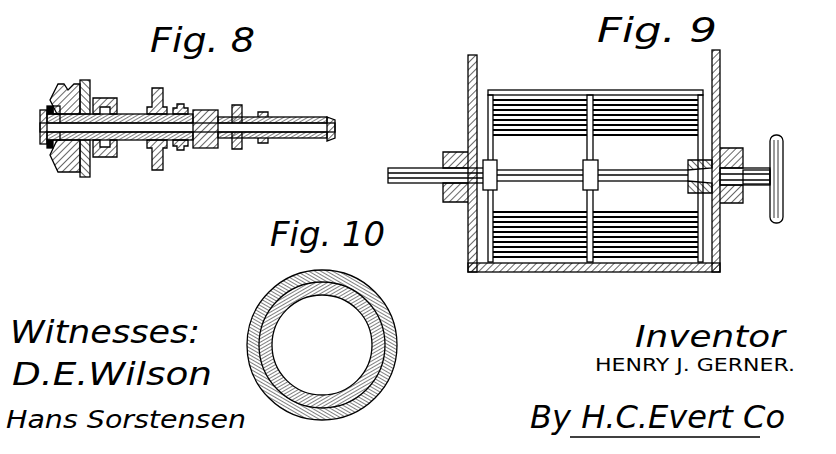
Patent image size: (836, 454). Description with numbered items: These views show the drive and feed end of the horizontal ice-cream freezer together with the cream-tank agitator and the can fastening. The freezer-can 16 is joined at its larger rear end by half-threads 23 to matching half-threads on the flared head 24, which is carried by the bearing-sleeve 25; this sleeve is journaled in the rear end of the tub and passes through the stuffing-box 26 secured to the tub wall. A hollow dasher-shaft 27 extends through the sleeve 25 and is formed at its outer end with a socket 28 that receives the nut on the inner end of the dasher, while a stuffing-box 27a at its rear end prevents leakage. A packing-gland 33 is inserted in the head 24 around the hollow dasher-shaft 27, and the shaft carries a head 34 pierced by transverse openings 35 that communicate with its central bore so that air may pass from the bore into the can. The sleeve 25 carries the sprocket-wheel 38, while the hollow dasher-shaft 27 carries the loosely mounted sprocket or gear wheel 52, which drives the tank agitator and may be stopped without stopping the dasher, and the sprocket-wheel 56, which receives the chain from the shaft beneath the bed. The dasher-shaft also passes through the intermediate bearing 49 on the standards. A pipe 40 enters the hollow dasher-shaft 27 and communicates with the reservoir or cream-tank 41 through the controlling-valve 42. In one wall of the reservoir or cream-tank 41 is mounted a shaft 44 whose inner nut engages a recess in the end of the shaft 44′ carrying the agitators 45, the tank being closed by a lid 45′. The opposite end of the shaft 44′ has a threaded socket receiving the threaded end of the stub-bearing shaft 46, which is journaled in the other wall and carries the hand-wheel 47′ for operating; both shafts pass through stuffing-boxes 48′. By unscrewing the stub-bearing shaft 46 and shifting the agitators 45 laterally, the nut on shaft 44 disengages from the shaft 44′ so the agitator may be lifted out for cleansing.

In FIG. 8, the freezer-can 16 is at (84, 172).
In FIG. 10, the freezer-can 16 is at (366, 291).
In FIG. 10, the half-threads 23 is at (395, 330).
In FIG. 8, the flared head 24 is at (60, 86).
In FIG. 10, the flared head 24 is at (332, 291).
In FIG. 8, the bearing-sleeve 25 is at (129, 114).
In FIG. 8, the stuffing-box 26 is at (104, 157).
In FIG. 8, the hollow dasher-shaft 27 is at (131, 133).
In FIG. 8, the stuffing-box 27a is at (266, 139).
In FIG. 8, the socket 28 is at (40, 127).
In FIG. 8, the packing-gland 33 is at (56, 142).
In FIG. 8, the head 34 is at (46, 140).
In FIG. 8, the transverse openings 35 is at (54, 108).
In FIG. 8, the sprocket-wheel 38 is at (158, 170).
In FIG. 8, the pipe 40 is at (285, 124).
In FIG. 8, the controlling-valve 42 is at (330, 118).
In FIG. 8, the intermediate bearing 49 is at (205, 148).
In FIG. 8, the sprocket or gear wheel 52 is at (241, 108).
In FIG. 8, the sprocket-wheel 56 is at (182, 108).
In FIG. 9, the reservoir or cream-tank 41 is at (720, 80).
In FIG. 9, the shaft 44 is at (415, 185).
In FIG. 9, the shaft 44′ is at (545, 171).
In FIG. 9, the agitators 45 is at (618, 95).
In FIG. 9, the lid 45′ is at (705, 165).
In FIG. 9, the shaft end 46 is at (755, 188).
In FIG. 9, the hand-wheel 47′ is at (778, 135).
In FIG. 9, the stuffing-boxes 48′ is at (458, 152).